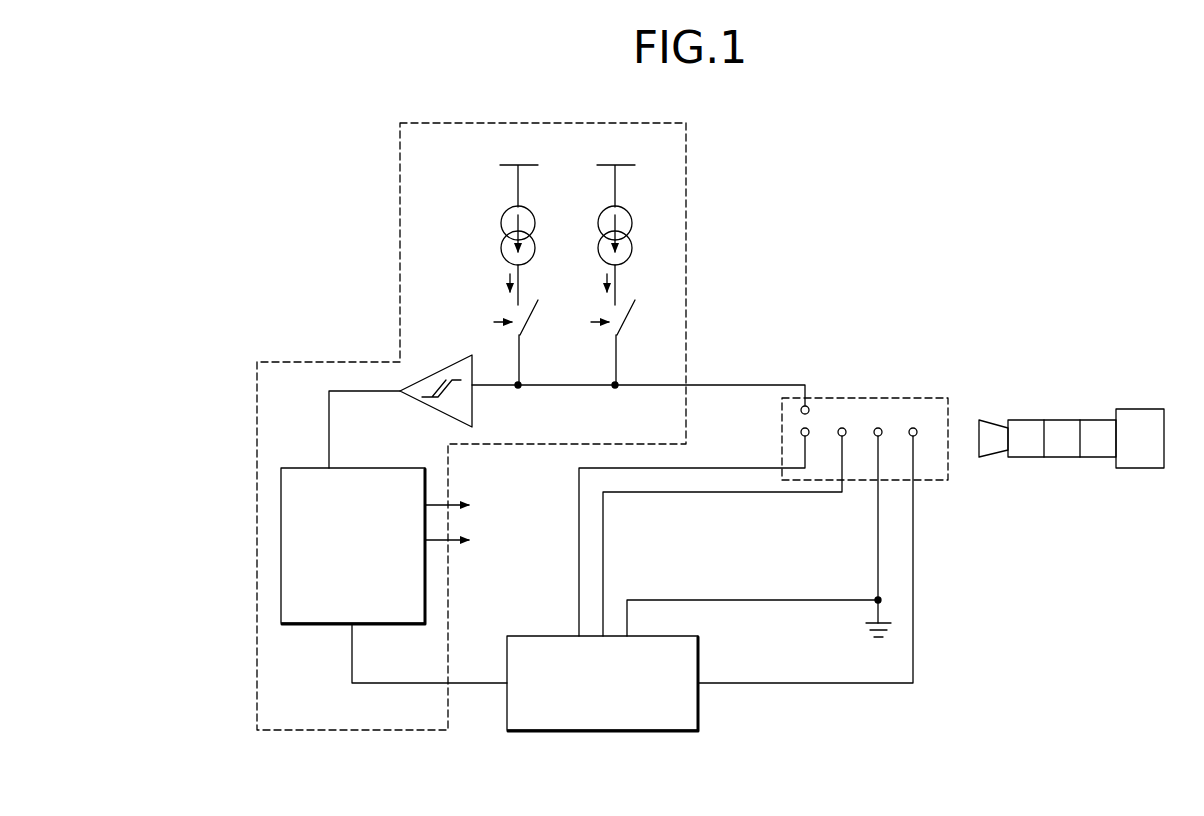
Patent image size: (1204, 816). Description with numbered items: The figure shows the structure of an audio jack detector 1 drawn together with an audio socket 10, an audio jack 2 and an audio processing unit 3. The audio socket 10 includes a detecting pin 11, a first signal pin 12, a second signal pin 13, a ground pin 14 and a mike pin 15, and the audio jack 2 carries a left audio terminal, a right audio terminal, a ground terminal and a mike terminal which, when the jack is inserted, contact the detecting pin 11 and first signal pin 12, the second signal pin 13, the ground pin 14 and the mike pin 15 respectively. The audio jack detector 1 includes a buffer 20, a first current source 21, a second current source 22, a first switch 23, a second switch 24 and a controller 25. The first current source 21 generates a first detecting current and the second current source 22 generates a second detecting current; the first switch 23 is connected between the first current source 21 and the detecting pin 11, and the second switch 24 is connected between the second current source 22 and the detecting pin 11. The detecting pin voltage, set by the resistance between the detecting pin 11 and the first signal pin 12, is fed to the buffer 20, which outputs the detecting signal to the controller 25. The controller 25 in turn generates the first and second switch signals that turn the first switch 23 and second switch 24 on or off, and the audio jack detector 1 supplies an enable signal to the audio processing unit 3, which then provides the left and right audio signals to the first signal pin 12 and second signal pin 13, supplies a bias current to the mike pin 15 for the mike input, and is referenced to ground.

The audio jack detector 1 is at (687, 201).
The audio jack 2 is at (1139, 404).
The audio processing unit 3 is at (699, 711).
The audio socket 10 is at (882, 398).
The detecting pin 11 is at (808, 406).
The first signal pin 12 is at (808, 436).
The second signal pin 13 is at (845, 436).
The ground pin 14 is at (881, 436).
The mike pin 15 is at (916, 436).
The buffer 20 is at (476, 406).
The first current source 21 is at (503, 214).
The second current source 22 is at (600, 214).
The first switch 23 is at (531, 320).
The second switch 24 is at (628, 320).
The controller 25 is at (325, 625).